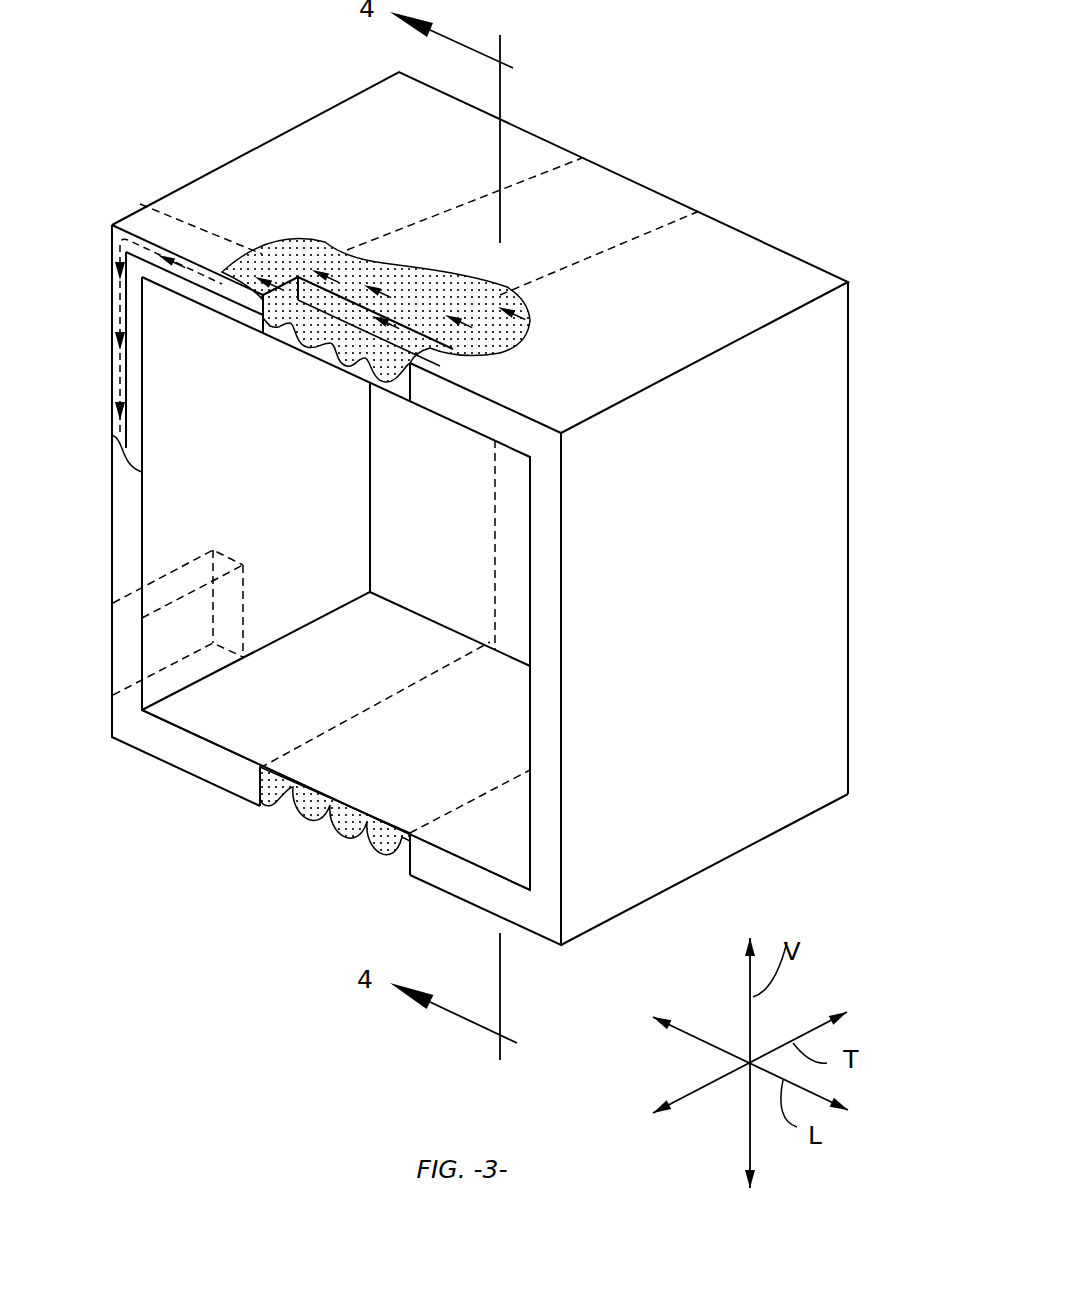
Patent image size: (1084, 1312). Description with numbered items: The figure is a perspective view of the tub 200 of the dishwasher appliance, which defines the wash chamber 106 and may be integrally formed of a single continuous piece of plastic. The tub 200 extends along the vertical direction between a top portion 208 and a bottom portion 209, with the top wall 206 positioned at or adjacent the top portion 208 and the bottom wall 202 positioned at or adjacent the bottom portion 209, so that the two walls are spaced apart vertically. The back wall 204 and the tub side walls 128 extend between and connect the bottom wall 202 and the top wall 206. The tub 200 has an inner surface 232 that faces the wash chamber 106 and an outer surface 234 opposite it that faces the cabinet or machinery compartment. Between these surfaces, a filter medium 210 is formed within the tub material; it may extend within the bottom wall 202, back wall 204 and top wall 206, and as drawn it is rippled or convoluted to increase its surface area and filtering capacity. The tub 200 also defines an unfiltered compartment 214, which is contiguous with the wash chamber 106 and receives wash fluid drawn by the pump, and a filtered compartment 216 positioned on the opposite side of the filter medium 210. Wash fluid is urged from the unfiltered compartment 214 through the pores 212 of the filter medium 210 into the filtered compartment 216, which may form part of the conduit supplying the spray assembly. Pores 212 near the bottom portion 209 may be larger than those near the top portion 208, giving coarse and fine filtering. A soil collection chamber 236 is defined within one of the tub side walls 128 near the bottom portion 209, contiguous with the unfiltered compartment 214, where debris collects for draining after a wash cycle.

The tub 200 is at (218, 95).
The top wall 206 is at (718, 257).
The top portion 208 is at (850, 282).
The bottom portion 209 is at (849, 792).
The tub side walls 128 is at (168, 502).
The bottom wall 202 is at (353, 862).
The back wall 204 is at (397, 483).
The soil collection chamber 236 is at (242, 592).
The filtered compartment 216 is at (279, 330).
The filter medium 210 is at (405, 278).
The pores 212 is at (500, 318).
The unfiltered compartment 214 is at (333, 270).
The outer surface 234 is at (346, 852).
The inner surface 232 is at (378, 778).
The wash chamber 106 is at (240, 695).